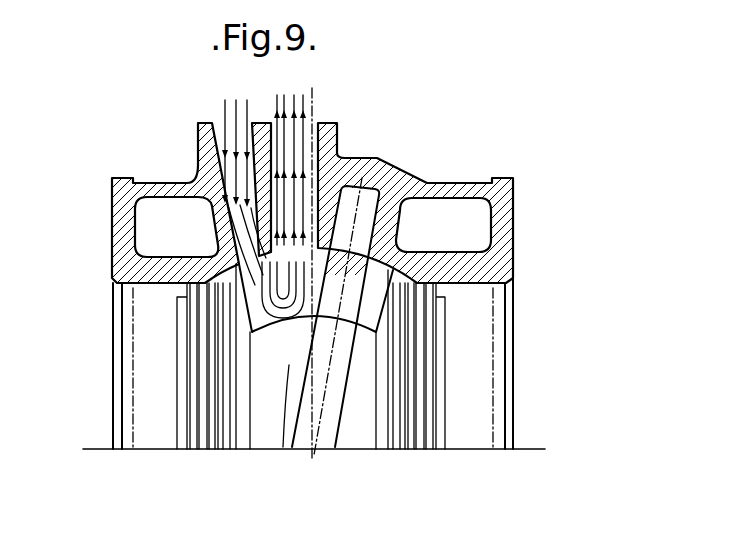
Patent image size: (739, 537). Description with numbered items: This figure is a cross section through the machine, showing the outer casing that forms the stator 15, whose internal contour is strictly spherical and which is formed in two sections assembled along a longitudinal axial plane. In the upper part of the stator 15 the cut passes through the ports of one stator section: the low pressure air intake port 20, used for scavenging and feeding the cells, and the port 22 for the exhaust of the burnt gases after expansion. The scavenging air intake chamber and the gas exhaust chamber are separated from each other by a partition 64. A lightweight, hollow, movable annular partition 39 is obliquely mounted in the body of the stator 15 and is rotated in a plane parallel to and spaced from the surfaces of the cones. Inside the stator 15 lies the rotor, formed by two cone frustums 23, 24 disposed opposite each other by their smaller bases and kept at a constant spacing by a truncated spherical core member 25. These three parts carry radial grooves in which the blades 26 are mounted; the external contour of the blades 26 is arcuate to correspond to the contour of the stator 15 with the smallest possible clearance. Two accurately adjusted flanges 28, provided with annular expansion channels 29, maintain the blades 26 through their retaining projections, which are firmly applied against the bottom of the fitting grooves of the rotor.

The low pressure air intake port 20 is at (227, 140).
The exhaust port 22 is at (300, 133).
The partition 64 is at (257, 123).
The movable annular partition 39 is at (380, 173).
The stator 15 is at (513, 199).
The annular expansion channels 29 is at (420, 282).
The blades 26 is at (367, 312).
The flanges 28 is at (180, 362).
The cone frustum 24 is at (248, 430).
The truncated spherical core member 25 is at (283, 447).
The cone frustum 23 is at (382, 417).